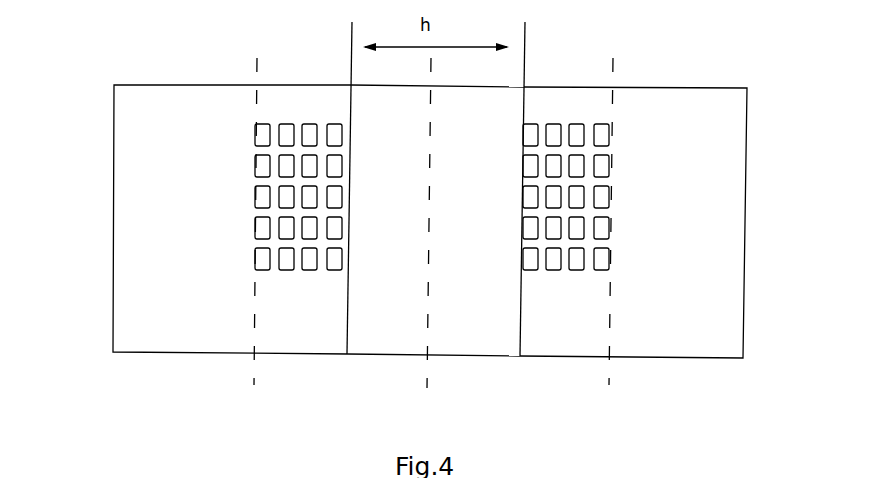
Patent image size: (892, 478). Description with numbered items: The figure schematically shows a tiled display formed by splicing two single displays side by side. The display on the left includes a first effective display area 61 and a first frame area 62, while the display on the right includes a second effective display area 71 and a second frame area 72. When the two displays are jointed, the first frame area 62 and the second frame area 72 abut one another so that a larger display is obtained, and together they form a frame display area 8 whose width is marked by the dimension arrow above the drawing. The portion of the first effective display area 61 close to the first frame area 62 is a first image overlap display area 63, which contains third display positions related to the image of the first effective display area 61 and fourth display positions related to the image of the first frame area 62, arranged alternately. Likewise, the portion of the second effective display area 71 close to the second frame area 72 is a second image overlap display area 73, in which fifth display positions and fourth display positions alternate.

The first effective display area 61 is at (114, 157).
The second effective display area 71 is at (746, 198).
The first frame area 62 is at (390, 353).
The second frame area 72 is at (463, 354).
The first image overlap display area 63 is at (295, 353).
The second image overlap display area 73 is at (567, 358).
The frame display area 8 is at (505, 364).